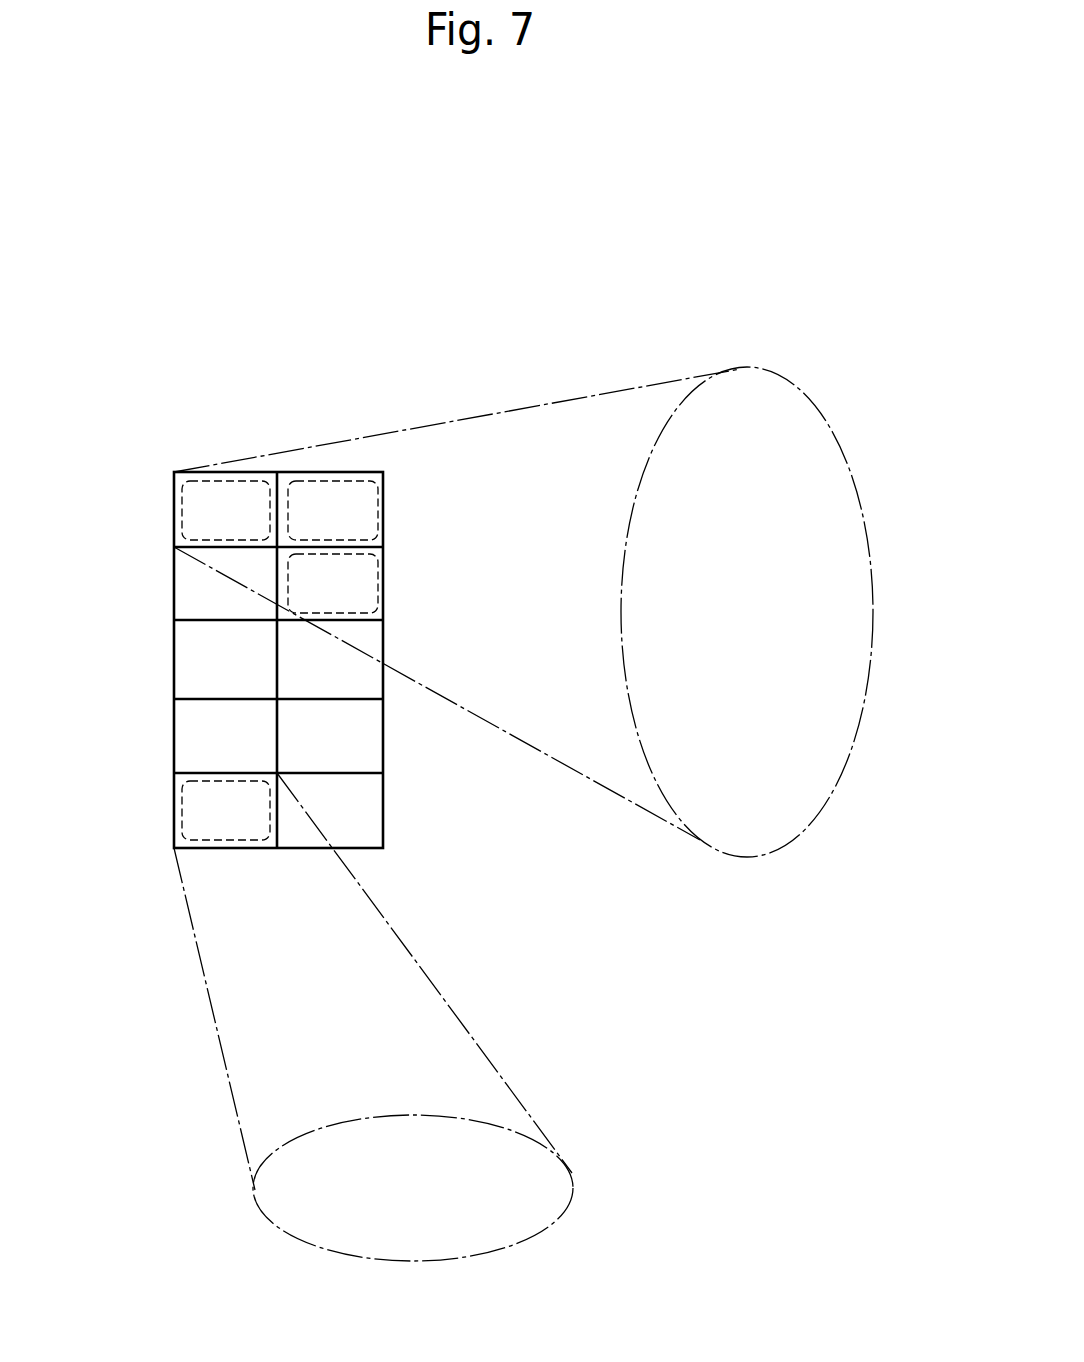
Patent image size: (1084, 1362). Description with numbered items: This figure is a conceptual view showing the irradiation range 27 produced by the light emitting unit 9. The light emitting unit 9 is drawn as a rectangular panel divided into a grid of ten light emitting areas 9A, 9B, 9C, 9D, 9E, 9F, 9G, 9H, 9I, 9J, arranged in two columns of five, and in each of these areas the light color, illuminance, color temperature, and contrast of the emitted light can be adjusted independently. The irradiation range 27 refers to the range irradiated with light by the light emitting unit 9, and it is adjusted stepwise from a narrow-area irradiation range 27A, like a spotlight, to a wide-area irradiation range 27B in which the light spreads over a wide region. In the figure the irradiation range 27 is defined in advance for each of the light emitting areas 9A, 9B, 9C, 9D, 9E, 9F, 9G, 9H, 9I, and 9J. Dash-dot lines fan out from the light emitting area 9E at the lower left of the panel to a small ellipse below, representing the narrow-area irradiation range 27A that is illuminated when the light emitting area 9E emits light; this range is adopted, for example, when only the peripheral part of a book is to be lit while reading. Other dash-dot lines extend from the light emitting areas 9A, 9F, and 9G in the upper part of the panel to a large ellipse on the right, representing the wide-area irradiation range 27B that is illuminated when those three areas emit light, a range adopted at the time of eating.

The light emitting unit 9 is at (348, 338).
The light emitting area 9A is at (181, 520).
The light emitting area 9B is at (181, 593).
The light emitting area 9C is at (183, 653).
The light emitting area 9D is at (183, 742).
The light emitting area 9E is at (183, 815).
The light emitting area 9F is at (374, 512).
The light emitting area 9G is at (374, 585).
The light emitting area 9H is at (374, 650).
The light emitting area 9I is at (374, 733).
The light emitting area 9J is at (374, 807).
The irradiation range 27 is at (546, 814).
The narrow-area irradiation range 27A is at (552, 1190).
The wide-area irradiation range 27B is at (802, 800).